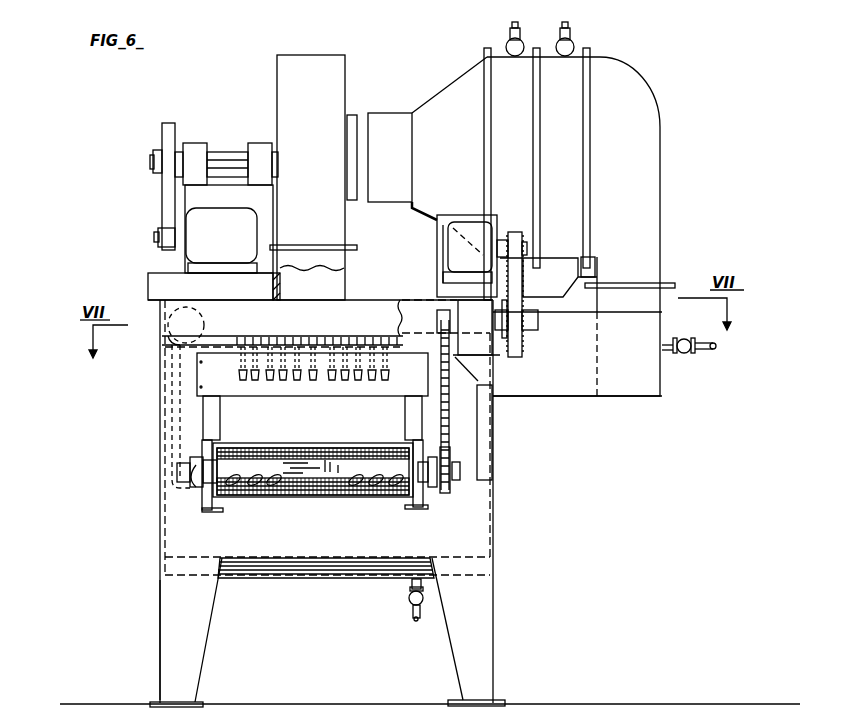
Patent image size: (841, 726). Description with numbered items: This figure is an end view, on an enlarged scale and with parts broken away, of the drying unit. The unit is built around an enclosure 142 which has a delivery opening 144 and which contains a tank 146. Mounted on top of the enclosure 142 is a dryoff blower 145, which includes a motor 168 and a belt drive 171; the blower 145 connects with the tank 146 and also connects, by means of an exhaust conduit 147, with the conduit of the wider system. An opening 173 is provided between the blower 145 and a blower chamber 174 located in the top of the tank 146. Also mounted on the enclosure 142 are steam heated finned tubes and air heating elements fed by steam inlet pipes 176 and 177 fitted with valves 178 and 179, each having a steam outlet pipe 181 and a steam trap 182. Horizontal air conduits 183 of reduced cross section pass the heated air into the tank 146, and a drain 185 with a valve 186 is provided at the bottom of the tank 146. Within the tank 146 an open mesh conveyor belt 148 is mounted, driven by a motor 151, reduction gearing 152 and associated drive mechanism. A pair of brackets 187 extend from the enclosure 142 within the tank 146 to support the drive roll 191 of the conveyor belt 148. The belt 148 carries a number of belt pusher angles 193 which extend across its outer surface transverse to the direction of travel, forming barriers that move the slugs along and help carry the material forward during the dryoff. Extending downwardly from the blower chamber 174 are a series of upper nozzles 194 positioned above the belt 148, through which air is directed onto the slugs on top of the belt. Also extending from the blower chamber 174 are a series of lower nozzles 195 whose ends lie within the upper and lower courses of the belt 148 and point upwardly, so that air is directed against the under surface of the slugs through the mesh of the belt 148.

The enclosure 142 is at (153, 412).
The delivery opening 144 is at (312, 377).
The dryoff blower 145 is at (313, 177).
The tank 146 is at (175, 535).
The exhaust conduit 147 is at (165, 318).
The open mesh conveyor belt 148 is at (310, 455).
The motor 151 is at (468, 228).
The reduction gearing 152 is at (472, 317).
The motor 168 is at (229, 229).
The belt drive 171 is at (147, 167).
The opening 173 is at (308, 283).
The blower chamber 174 is at (282, 322).
The steam inlet pipe 176 is at (509, 36).
The steam inlet pipe 177 is at (574, 36).
The valve 178 is at (504, 55).
The valve 179 is at (552, 55).
The steam outlet pipe 181 is at (707, 350).
The steam trap 182 is at (682, 339).
The horizontal air conduit 183 is at (565, 384).
The drain 185 is at (410, 581).
The valve 186 is at (408, 596).
The bracket 187 is at (215, 511).
The drive roll 191 is at (208, 463).
The belt pusher angle 193 is at (350, 446).
The upper nozzle 194 is at (243, 380).
The lower nozzle 195 is at (274, 476).